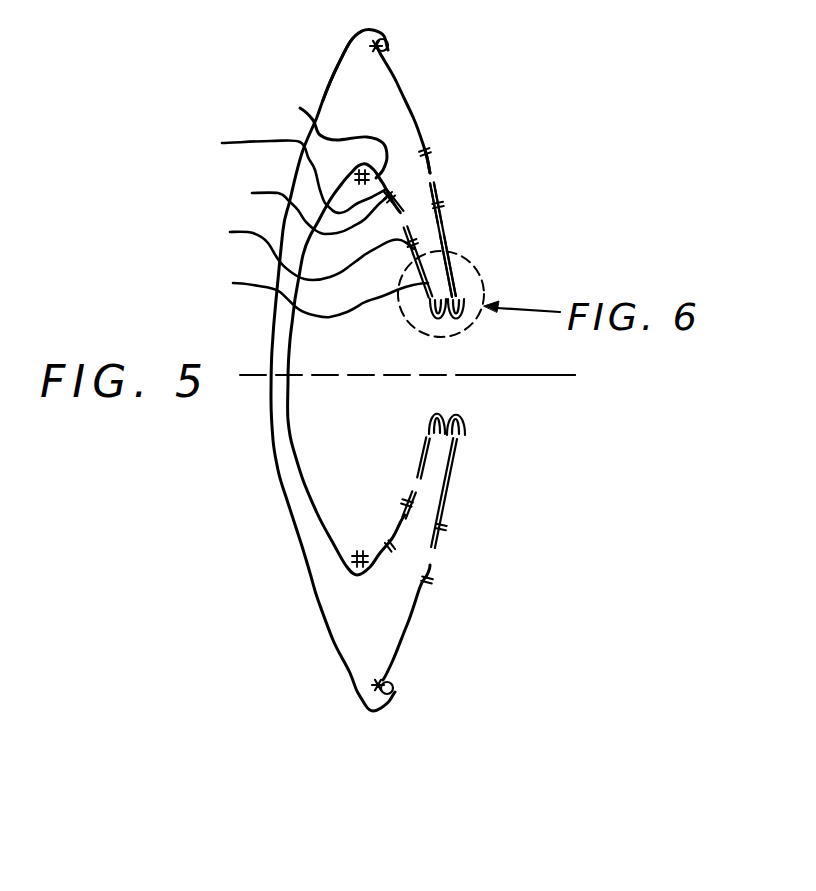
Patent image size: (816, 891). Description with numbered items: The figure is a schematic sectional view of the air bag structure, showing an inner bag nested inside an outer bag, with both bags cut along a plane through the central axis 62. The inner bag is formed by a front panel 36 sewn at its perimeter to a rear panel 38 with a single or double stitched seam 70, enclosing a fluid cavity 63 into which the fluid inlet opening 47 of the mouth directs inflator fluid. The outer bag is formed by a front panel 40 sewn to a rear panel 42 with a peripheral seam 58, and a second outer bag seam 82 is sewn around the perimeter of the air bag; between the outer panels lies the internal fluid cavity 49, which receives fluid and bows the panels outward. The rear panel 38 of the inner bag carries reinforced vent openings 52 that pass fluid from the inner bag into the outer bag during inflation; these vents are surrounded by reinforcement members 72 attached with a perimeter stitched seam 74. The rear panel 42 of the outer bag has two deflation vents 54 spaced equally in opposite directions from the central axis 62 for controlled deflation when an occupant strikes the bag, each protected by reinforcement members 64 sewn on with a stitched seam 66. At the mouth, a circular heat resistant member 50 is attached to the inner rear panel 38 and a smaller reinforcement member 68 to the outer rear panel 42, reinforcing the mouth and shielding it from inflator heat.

The front panel 36 is at (300, 477).
The rear panel 38 is at (300, 108).
The front panel 40 is at (337, 70).
The rear panel 42 is at (404, 90).
The fluid inlet opening 47 is at (453, 357).
The internal fluid cavity 49 is at (384, 626).
The heat resistant member 50 is at (270, 288).
The vent openings 52 is at (406, 228).
The vents 54 is at (438, 180).
The seam 58 is at (379, 49).
The central axis 62 is at (523, 377).
The fluid cavity 63 is at (374, 435).
The reinforcement members 64 is at (429, 163).
The stitched seam 66 is at (427, 153).
The reinforcement member 68 is at (453, 287).
The stitched seam 70 is at (300, 142).
The reinforcement members 72 is at (288, 200).
The stitched seam 74 is at (268, 243).
The second outer bag seam 82 is at (380, 28).